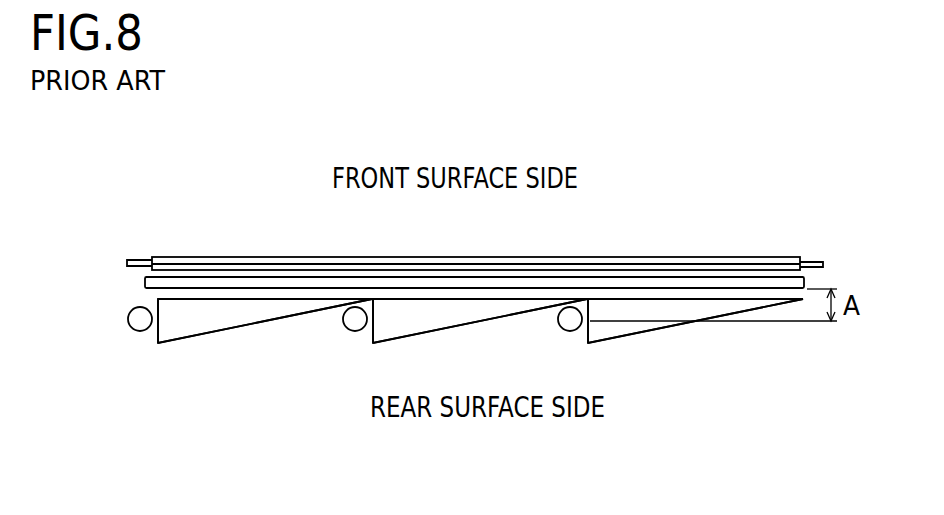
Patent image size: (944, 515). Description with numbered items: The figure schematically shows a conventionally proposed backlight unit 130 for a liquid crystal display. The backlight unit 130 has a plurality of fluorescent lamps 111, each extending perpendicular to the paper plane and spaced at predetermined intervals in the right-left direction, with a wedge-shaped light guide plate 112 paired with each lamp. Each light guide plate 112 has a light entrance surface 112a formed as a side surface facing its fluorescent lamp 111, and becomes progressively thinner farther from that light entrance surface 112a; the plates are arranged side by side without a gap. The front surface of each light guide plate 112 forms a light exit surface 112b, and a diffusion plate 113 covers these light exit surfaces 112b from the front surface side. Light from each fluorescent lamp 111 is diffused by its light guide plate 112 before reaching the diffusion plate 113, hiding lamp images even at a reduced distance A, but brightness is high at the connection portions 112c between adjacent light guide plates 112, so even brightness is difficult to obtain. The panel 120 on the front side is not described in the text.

The liquid crystal panel 120 is at (145, 252).
The diffusion plate 113 is at (143, 280).
The light guide plate 112 is at (216, 327).
The light entrance surface 112a is at (157, 336).
The light exit surface 112b is at (267, 300).
The connection portion 112c is at (372, 297).
The fluorescent lamp 111 is at (128, 320).
The backlight unit 130 is at (187, 358).